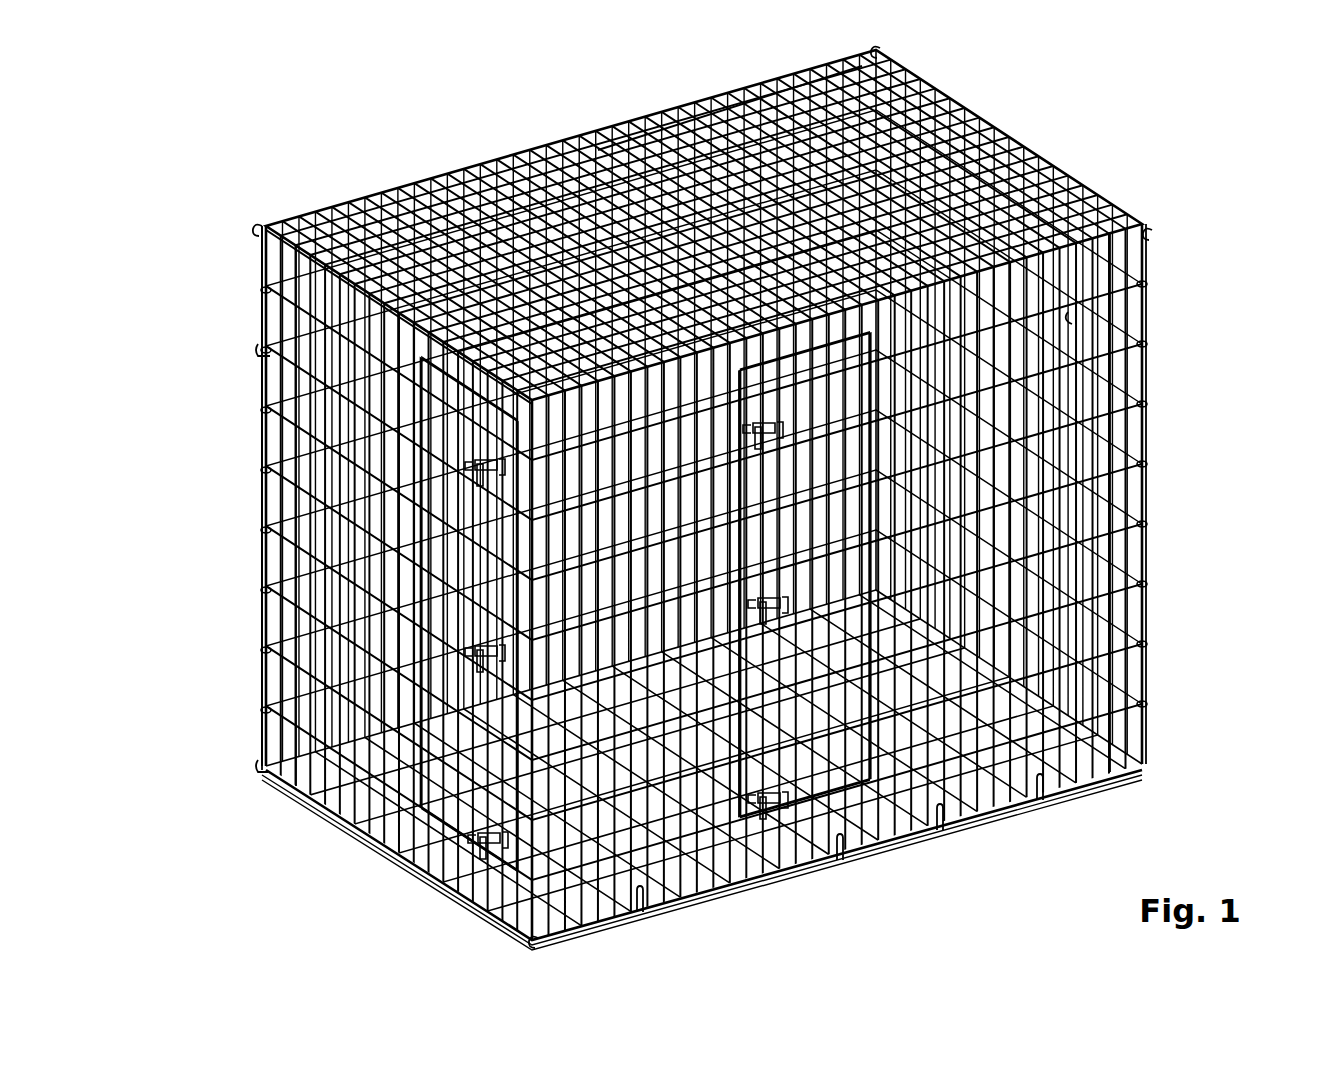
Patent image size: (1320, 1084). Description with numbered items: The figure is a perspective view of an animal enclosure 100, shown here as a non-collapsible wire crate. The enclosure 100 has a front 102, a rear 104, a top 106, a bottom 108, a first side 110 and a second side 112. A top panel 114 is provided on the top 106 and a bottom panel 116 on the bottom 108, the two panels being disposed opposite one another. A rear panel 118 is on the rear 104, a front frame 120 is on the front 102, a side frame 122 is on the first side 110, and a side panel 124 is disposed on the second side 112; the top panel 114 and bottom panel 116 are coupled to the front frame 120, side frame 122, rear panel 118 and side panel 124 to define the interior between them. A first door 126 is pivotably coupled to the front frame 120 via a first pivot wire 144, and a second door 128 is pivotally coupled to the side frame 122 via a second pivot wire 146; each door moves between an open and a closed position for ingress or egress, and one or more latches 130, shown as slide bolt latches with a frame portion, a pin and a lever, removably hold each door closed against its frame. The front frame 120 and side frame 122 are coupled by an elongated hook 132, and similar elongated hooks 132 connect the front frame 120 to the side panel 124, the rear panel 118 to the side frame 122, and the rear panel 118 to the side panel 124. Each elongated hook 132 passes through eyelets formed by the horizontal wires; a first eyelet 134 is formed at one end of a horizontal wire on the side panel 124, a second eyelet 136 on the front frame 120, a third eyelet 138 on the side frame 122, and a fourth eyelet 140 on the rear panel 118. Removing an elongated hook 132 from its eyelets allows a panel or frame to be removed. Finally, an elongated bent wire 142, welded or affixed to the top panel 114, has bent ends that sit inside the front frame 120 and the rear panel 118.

The enclosure 100 is at (703, 502).
The front 102 is at (638, 777).
The rear 104 is at (743, 226).
The top 106 is at (1016, 93).
The bottom 108 is at (898, 593).
The first side 110 is at (322, 583).
The second side 112 is at (1166, 418).
The top panel 114 is at (648, 116).
The bottom panel 116 is at (732, 893).
The rear panel 118 is at (300, 636).
The front frame 120 is at (640, 860).
The side frame 122 is at (278, 312).
The side panel 124 is at (1104, 692).
The first door 126 is at (975, 712).
The second door 128 is at (425, 757).
The latch 130 is at (485, 665).
The elongated hook 132 is at (884, 50).
The first eyelet 134 is at (1142, 520).
The second eyelet 136 is at (1142, 532).
The third eyelet 138 is at (265, 350).
The fourth eyelet 140 is at (262, 770).
The elongated bent wire 142 is at (598, 150).
The first pivot wire 144 is at (1076, 318).
The second pivot wire 146 is at (296, 690).